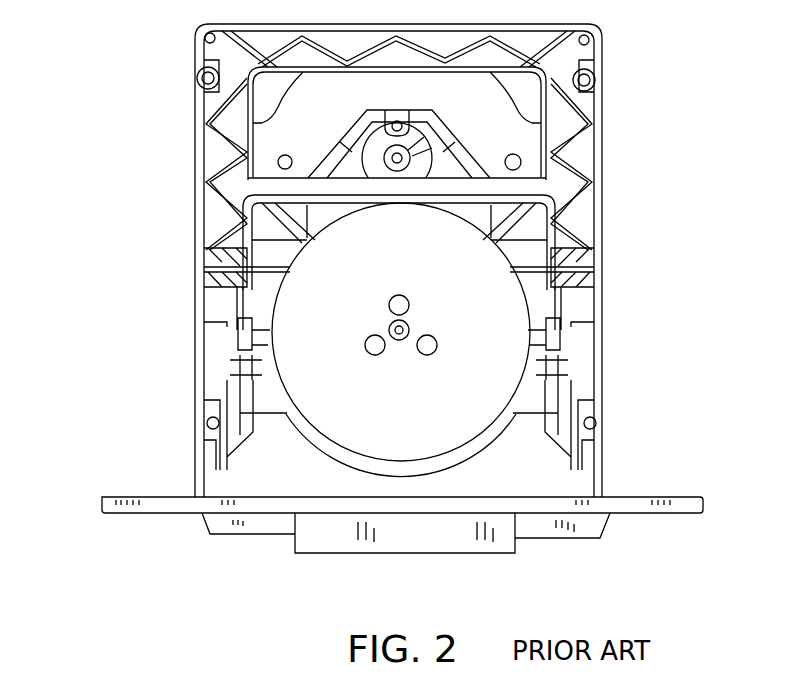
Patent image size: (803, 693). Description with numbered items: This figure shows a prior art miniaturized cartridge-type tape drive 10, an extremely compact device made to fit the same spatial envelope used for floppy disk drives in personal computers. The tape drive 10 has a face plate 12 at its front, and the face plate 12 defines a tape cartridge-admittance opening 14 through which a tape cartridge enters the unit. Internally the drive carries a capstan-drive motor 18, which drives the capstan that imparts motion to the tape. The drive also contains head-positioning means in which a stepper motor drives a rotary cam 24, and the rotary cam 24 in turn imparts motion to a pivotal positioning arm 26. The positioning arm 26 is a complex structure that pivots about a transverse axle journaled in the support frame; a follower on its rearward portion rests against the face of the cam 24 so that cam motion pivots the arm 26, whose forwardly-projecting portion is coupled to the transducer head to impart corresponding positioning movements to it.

The cartridge-type tape drive 10 is at (675, 104).
The face plate 12 is at (160, 514).
The tape cartridge-admittance opening 14 is at (230, 537).
The capstan-drive motor 18 is at (430, 272).
The rotary cam 24 is at (350, 148).
The pivotal positioning arm 26 is at (347, 133).